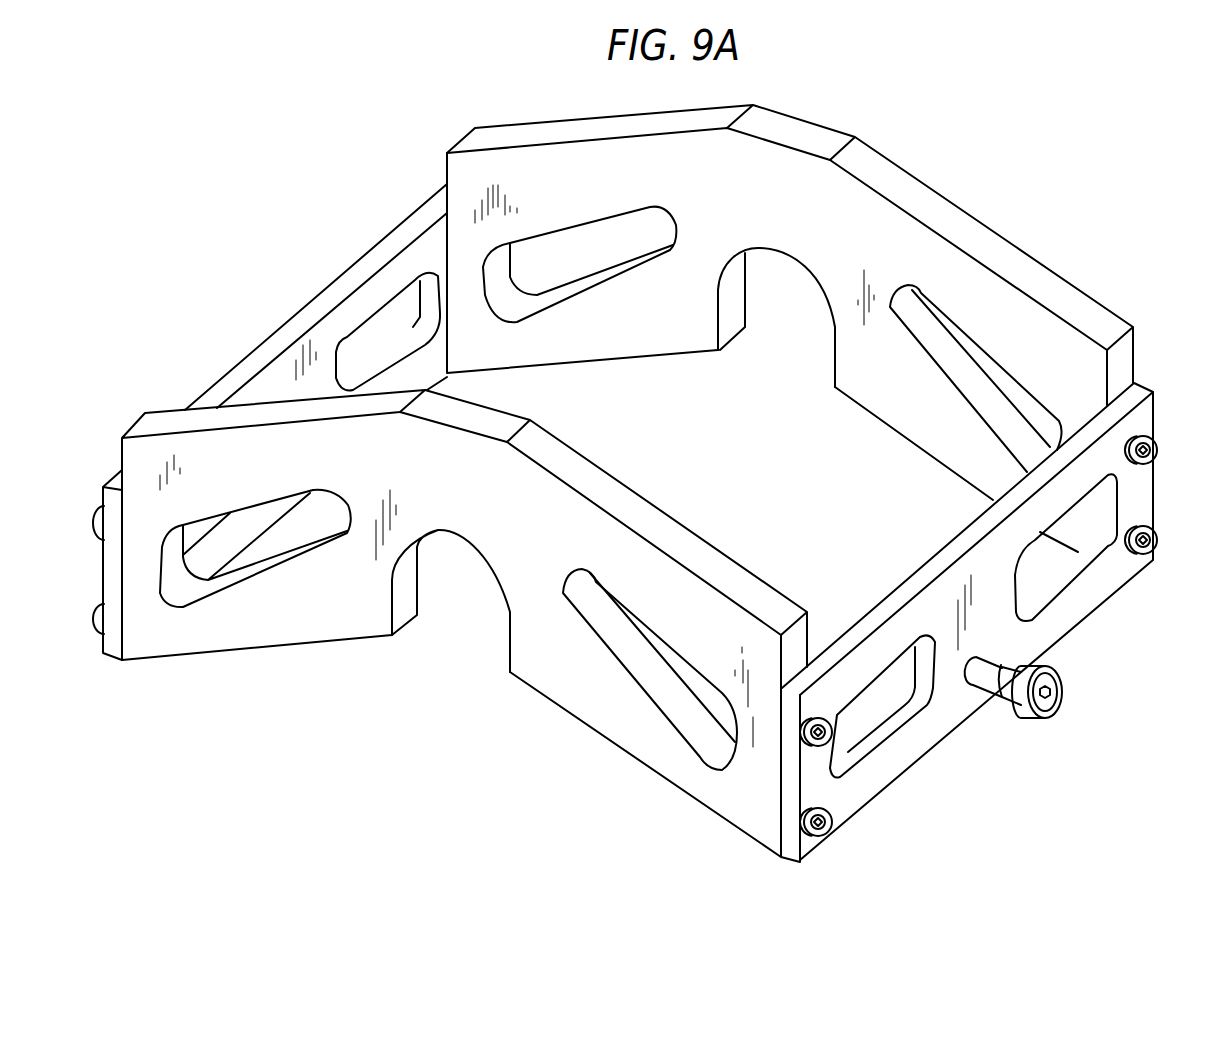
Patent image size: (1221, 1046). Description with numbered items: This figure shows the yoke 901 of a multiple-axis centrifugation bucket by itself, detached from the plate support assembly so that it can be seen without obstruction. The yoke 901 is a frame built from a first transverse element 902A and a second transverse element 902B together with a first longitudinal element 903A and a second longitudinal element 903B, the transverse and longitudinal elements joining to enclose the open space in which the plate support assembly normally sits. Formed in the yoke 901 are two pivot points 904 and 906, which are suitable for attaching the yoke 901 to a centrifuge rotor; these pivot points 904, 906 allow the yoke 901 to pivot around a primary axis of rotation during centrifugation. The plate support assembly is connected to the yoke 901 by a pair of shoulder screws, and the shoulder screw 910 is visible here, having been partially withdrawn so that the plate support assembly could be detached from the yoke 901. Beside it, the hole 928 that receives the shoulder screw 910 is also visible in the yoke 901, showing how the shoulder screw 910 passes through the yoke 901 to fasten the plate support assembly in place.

The yoke 901 is at (172, 417).
The first transverse element 902A is at (328, 300).
The second transverse element 902B is at (1103, 597).
The first longitudinal element 903A is at (581, 453).
The second longitudinal element 903B is at (827, 128).
The pivot point 904 is at (476, 556).
The pivot point 906 is at (807, 280).
The shoulder screw 910 is at (1053, 695).
The hole 928 is at (967, 683).